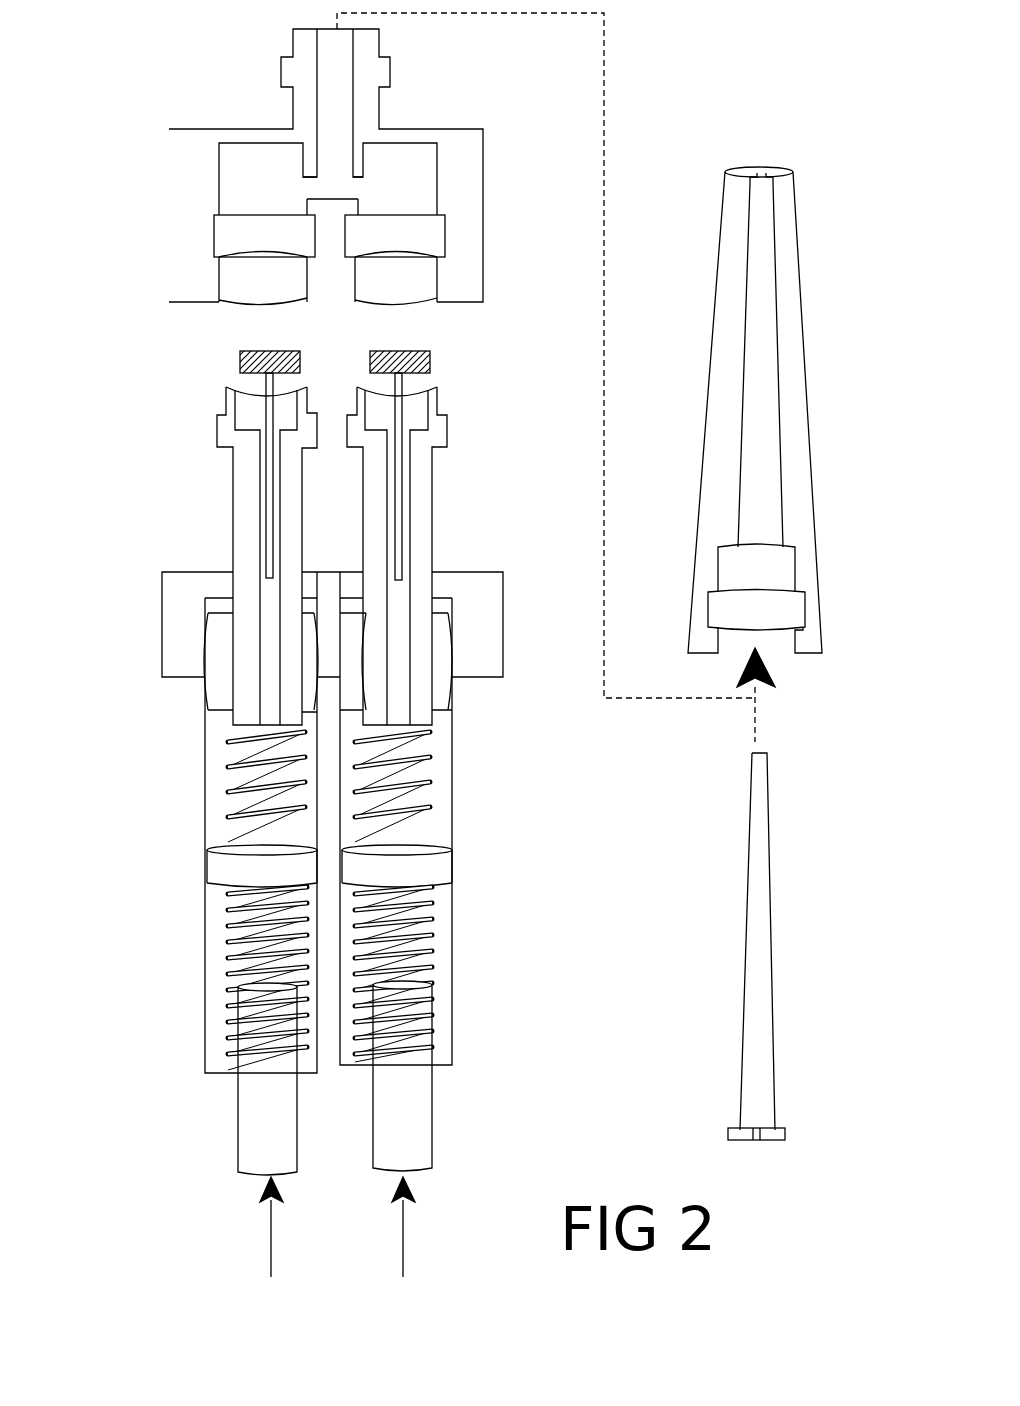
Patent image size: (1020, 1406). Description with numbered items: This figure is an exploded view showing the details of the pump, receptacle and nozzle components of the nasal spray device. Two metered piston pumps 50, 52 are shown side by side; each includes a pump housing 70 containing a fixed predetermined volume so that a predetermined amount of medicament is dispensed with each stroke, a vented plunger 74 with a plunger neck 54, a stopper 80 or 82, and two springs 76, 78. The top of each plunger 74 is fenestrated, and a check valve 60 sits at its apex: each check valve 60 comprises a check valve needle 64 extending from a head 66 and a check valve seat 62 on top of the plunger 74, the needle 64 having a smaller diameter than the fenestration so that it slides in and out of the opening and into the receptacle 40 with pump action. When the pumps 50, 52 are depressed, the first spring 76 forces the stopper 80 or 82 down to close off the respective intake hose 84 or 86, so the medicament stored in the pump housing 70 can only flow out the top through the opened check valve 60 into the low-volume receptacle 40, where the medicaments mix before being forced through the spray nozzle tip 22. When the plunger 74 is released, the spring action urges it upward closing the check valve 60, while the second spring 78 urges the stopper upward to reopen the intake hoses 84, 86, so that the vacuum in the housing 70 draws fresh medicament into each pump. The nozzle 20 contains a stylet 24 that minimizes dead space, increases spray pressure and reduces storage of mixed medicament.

The nozzle 20 is at (470, 99).
The receptacle 40 is at (280, 177).
The spray nozzle tip 22 is at (792, 367).
The stylet 24 is at (758, 993).
The pump 50 is at (178, 538).
The pump 52 is at (463, 538).
The plunger neck 54 is at (233, 497).
The check valve 60 is at (186, 464).
The check valve seat 62 is at (417, 430).
The check valve needle 64 is at (270, 457).
The head 66 is at (240, 365).
The pump housing 70 is at (327, 822).
The vented plunger 74 is at (210, 657).
The first spring 76 is at (227, 792).
The second spring 78 is at (250, 930).
The stopper 80 is at (218, 867).
The stopper 82 is at (422, 870).
The intake hose 84 is at (245, 1110).
The intake hose 86 is at (407, 1100).